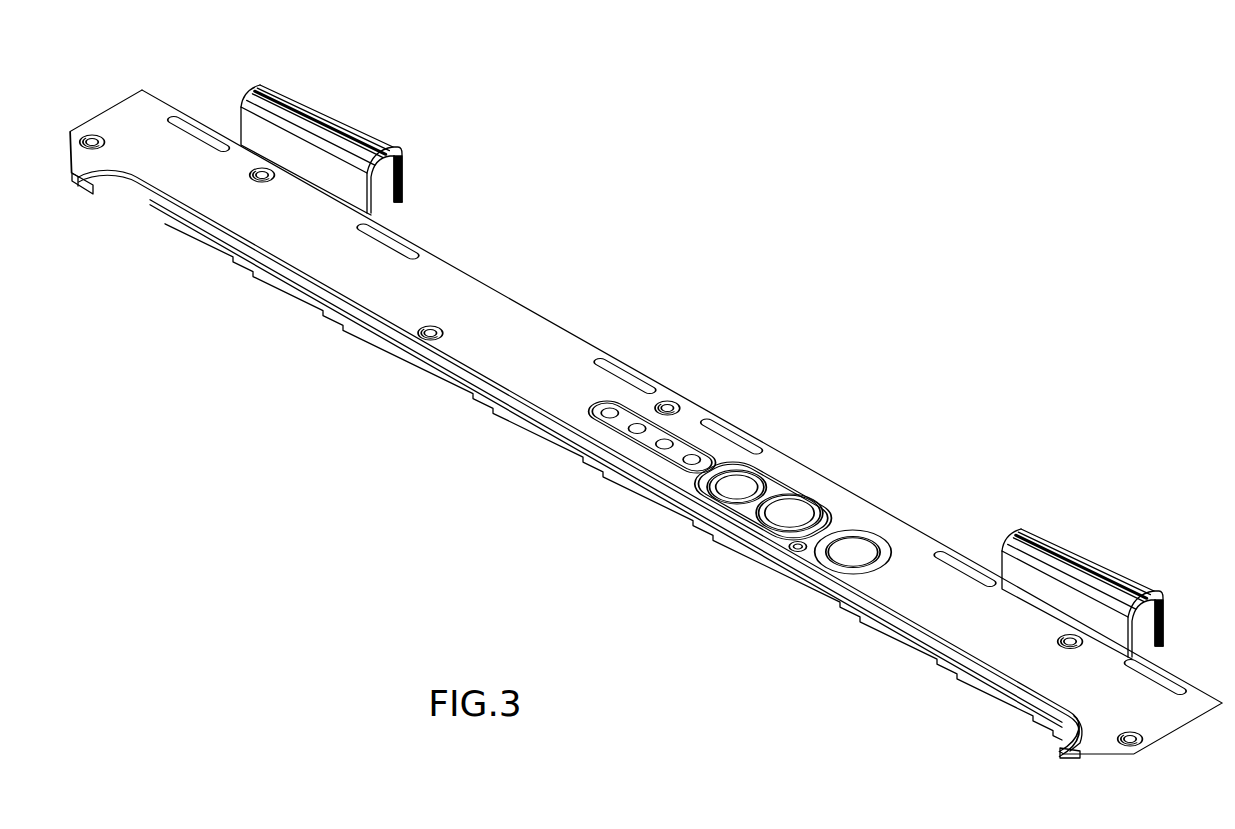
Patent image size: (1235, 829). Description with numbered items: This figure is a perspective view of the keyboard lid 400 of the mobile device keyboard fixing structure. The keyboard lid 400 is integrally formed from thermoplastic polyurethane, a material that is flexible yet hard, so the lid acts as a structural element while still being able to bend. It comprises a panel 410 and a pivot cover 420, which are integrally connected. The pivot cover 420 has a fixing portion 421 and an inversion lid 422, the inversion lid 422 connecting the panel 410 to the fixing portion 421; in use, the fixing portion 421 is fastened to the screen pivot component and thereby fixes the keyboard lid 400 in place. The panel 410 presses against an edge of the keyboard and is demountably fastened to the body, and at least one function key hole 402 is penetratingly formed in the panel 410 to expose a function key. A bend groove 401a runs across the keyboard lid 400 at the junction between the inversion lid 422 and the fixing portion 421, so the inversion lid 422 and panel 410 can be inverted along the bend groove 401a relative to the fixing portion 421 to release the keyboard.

The keyboard lid 400 is at (273, 504).
The panel 410 is at (485, 317).
The pivot cover 420 is at (392, 122).
The fixing portion 421 is at (403, 177).
The inversion lid 422 is at (327, 170).
The bend groove 401a is at (327, 118).
The function key hole 402 is at (866, 536).